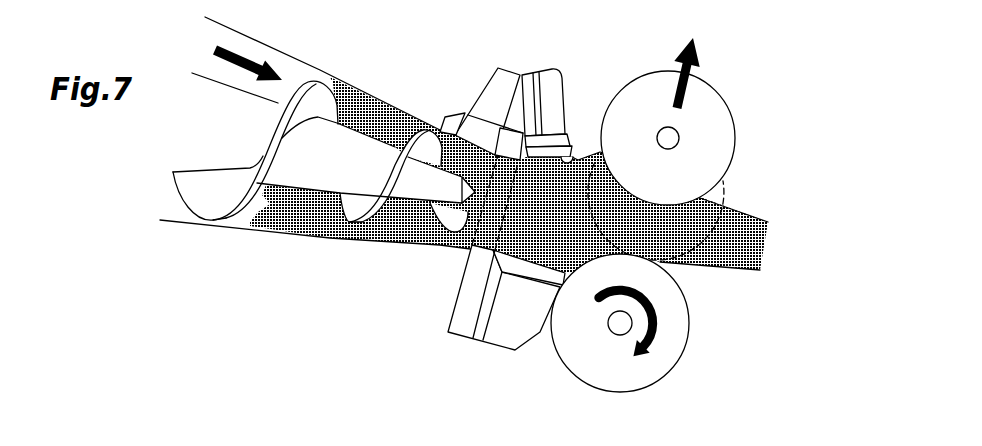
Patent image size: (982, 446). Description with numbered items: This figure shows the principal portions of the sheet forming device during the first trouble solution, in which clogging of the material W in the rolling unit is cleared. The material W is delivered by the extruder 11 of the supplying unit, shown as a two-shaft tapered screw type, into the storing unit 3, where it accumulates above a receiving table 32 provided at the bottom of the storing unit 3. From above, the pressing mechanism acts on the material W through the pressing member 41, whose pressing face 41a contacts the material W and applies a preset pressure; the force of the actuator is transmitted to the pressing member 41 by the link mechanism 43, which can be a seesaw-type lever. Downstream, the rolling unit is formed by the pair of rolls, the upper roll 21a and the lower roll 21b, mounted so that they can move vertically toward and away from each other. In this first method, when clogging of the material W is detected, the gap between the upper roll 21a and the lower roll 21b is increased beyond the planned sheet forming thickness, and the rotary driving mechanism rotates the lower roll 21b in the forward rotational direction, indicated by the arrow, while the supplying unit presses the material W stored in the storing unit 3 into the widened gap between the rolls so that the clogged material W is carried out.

The storing unit 3 is at (574, 249).
The extruder 11 is at (310, 177).
The upper roll 21a is at (727, 143).
The lower roll 21b is at (673, 323).
The receiving table 32 is at (520, 277).
The pressing member 41 is at (543, 70).
The pressing face 41a is at (583, 153).
The link mechanism 43 is at (468, 117).
The material W is at (737, 232).